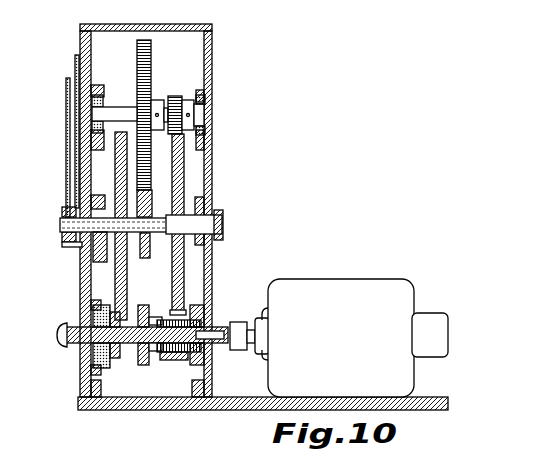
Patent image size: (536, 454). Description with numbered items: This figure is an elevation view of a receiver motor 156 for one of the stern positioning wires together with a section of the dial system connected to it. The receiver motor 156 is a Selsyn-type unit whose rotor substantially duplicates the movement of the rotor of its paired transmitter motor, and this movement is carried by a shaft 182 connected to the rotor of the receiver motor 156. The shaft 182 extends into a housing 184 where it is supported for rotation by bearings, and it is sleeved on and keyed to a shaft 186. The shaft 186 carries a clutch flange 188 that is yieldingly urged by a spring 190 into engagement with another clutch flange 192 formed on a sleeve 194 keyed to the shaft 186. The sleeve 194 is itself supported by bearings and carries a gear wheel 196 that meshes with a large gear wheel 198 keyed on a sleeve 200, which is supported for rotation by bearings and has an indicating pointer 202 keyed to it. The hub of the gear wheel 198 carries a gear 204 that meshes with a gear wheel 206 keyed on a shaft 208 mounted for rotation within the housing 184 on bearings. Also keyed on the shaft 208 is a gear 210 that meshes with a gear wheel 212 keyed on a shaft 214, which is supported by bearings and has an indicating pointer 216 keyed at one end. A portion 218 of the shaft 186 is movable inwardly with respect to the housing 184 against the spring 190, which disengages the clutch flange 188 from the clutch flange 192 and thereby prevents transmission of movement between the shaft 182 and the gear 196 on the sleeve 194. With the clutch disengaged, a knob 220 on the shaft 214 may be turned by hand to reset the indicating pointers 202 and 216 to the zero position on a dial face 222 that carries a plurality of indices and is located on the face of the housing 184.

The receiver motor 156 is at (392, 283).
The shaft 182 is at (226, 326).
The housing 184 is at (210, 148).
The shaft 186 is at (170, 356).
The clutch flange 188 is at (148, 316).
The spring 190 is at (180, 356).
The clutch flange 192 is at (142, 366).
The sleeve 194 is at (92, 324).
The gear wheel 196 is at (116, 358).
The large gear wheel 198 is at (127, 300).
The sleeve 200 is at (80, 262).
The indicating pointer 202 is at (77, 62).
The gear 204 is at (150, 200).
The gear wheel 206 is at (150, 72).
The shaft 208 is at (124, 107).
The gear 210 is at (182, 96).
The gear wheel 212 is at (182, 177).
The shaft 214 is at (224, 222).
The indicating pointer 216 is at (66, 108).
The portion of shaft 218 is at (72, 344).
The knob 220 is at (223, 236).
The dial face 222 is at (88, 276).